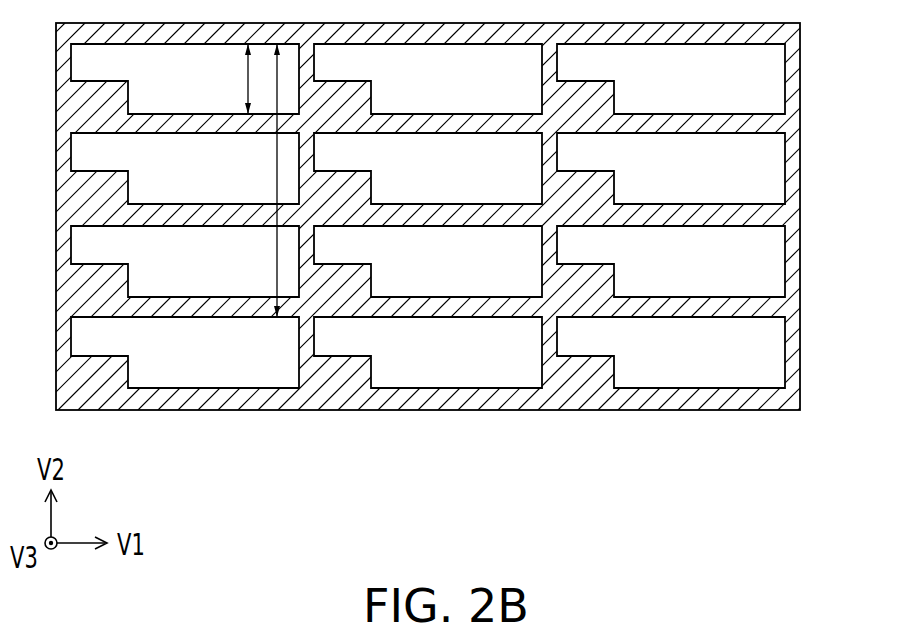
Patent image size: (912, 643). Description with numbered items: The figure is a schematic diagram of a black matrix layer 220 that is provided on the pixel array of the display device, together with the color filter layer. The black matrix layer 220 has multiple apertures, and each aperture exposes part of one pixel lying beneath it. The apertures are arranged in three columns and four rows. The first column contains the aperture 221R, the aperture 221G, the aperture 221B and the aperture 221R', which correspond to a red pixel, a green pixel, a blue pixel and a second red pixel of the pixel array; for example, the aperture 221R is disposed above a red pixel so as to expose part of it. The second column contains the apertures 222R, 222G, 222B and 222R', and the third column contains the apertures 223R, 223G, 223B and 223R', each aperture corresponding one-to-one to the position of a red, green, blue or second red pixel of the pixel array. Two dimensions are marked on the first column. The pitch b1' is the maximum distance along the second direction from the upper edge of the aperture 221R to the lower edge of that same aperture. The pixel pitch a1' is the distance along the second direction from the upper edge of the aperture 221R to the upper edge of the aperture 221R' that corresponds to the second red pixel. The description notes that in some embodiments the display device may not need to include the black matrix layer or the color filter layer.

The black matrix layer 220 is at (848, 467).
The aperture 221R is at (185, 79).
The aperture 221G is at (206, 186).
The aperture 221B is at (206, 278).
The aperture 221R' is at (185, 352).
The aperture 222R is at (428, 79).
The aperture 222G is at (465, 186).
The aperture 222B is at (465, 278).
The aperture 222R' is at (428, 352).
The aperture 223R is at (671, 79).
The aperture 223G is at (708, 186).
The aperture 223B is at (708, 279).
The aperture 223R' is at (671, 352).
The pitch b1' is at (230, 79).
The pixel pitch a1' is at (262, 180).